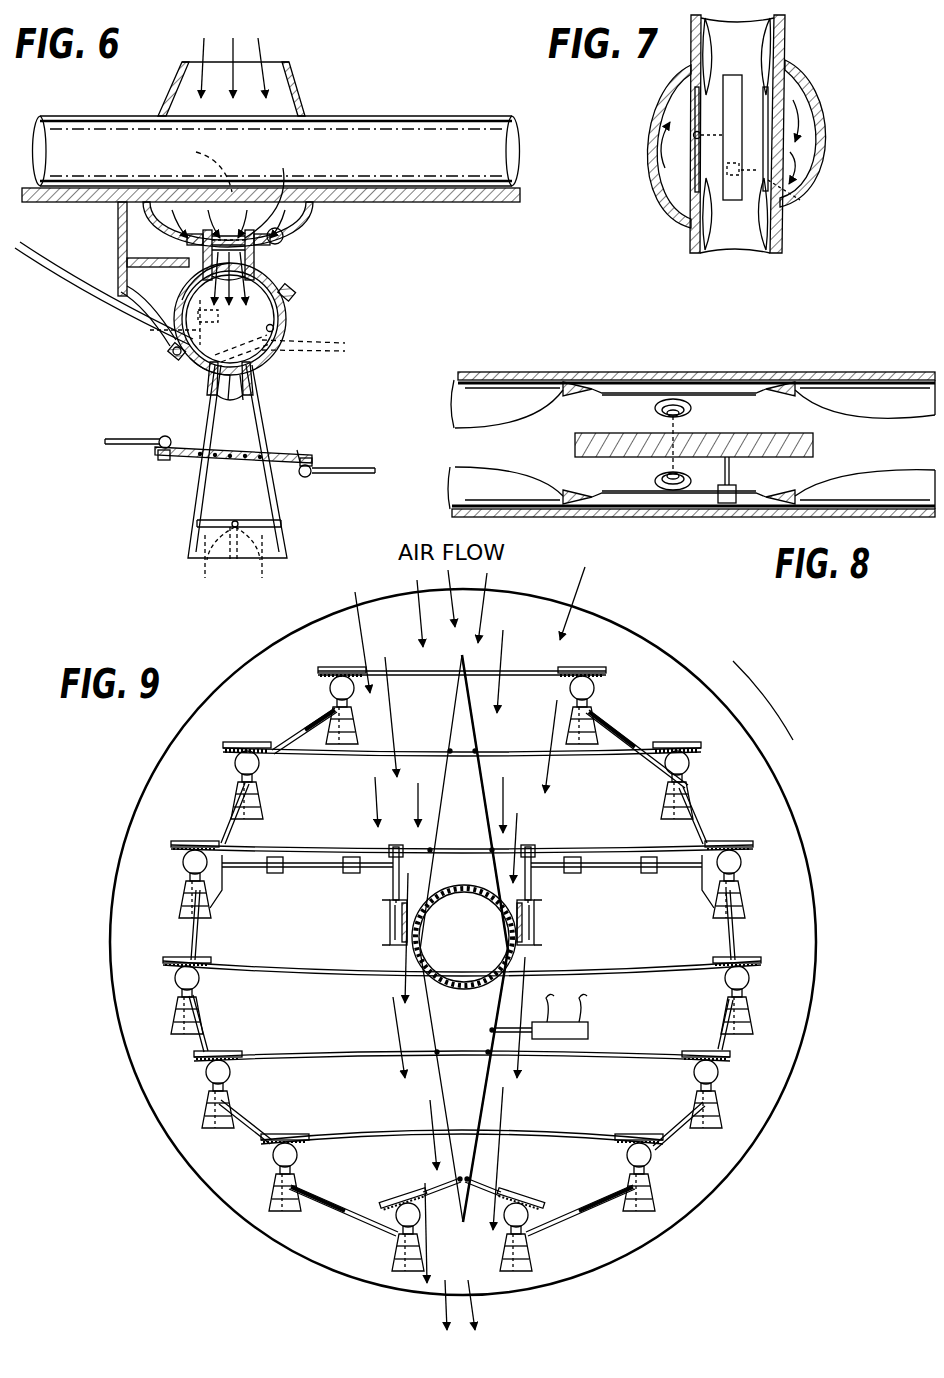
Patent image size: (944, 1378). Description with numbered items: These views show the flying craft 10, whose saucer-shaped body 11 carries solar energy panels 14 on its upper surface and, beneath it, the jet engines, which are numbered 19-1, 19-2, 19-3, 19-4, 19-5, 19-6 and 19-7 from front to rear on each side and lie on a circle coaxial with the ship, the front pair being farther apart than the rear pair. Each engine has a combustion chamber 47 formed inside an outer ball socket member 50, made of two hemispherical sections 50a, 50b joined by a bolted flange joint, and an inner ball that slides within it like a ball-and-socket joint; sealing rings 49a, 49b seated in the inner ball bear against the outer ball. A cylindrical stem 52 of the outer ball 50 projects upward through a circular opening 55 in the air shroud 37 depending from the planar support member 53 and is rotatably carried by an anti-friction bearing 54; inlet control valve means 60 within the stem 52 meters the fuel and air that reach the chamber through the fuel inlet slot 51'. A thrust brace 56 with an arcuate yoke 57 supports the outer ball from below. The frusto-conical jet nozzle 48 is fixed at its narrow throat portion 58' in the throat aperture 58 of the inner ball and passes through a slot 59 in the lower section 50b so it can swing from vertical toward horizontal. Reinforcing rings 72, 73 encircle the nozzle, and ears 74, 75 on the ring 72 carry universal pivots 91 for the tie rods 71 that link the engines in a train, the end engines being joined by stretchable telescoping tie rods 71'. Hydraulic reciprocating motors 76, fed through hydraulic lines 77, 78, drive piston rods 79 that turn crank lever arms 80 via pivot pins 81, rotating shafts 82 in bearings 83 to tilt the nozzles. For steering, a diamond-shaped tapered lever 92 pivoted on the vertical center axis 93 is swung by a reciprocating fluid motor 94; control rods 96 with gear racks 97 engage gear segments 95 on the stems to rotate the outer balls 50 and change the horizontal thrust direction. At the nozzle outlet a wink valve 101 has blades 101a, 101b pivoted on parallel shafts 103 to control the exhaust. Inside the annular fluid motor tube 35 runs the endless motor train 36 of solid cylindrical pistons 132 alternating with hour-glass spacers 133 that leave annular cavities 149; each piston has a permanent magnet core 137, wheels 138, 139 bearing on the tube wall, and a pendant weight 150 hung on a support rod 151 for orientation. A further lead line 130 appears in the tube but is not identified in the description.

In FIG. 9, the flying craft 10 is at (696, 666).
In FIG. 9, the saucer-shaped body 11 is at (762, 752).
In FIG. 6, the solar energy panels 14 is at (275, 60).
In FIG. 9, the jet engine number one 19-1 is at (330, 692).
In FIG. 9, the jet engine number two 19-2 is at (236, 775).
In FIG. 9, the jet engine number three 19-3 is at (186, 886).
In FIG. 9, the jet engine number four 19-4 is at (180, 992).
In FIG. 9, the jet engine number five 19-5 is at (213, 1086).
In FIG. 9, the jet engine number six 19-6 is at (280, 1180).
In FIG. 9, the jet engine number seven 19-7 is at (400, 1240).
In FIG. 6, the annular fluid motor tube 35 is at (430, 135).
In FIG. 7, the annular fluid motor tube 35 is at (787, 36).
In FIG. 8, the annular fluid motor tube 35 is at (815, 372).
In FIG. 7, the endless motor train 36 is at (768, 108).
In FIG. 8, the endless motor train 36 is at (740, 392).
In FIG. 6, the air shroud 37 is at (305, 232).
In FIG. 7, the air shroud 37 is at (828, 152).
In FIG. 6, the combustion chamber 47 is at (246, 334).
In FIG. 6, the jet nozzle 48 is at (196, 470).
In FIG. 6, the metallic sealing ring 49a is at (335, 350).
In FIG. 6, the metallic sealing ring 49b is at (172, 354).
In FIG. 6, the outer ball socket member 50 is at (290, 330).
In FIG. 6, the upper hemispherical section 50a is at (182, 302).
In FIG. 6, the lower hemispherical section 50b is at (200, 362).
In FIG. 6, the fuel inlet slot 51' is at (303, 320).
In FIG. 6, the cylindrical stem 52 is at (262, 288).
In FIG. 6, the planar support member 53 is at (82, 203).
In FIG. 6, the anti-friction bearing 54 is at (256, 262).
In FIG. 6, the circular opening 55 is at (268, 245).
In FIG. 6, the thrust brace 56 is at (78, 297).
In FIG. 6, the arcuate yoke 57 is at (166, 322).
In FIG. 6, the throat aperture 58 is at (251, 384).
In FIG. 6, the narrow throat portion 58' is at (211, 401).
In FIG. 6, the slot 59 is at (262, 352).
In FIG. 6, the inlet control valve means 60 is at (270, 190).
In FIG. 6, the tie rods 71 is at (246, 436).
In FIG. 9, the tie rods 71 is at (462, 966).
In FIG. 9, the stretchable tie rod 71' is at (487, 975).
In FIG. 6, the reinforcing ring 72 is at (250, 450).
In FIG. 6, the reinforcing ring 73 is at (284, 523).
In FIG. 6, the radially projecting ear 74 is at (298, 450).
In FIG. 6, the radially projecting ear 75 is at (172, 425).
In FIG. 9, the hydraulic reciprocating motor 76 is at (390, 935).
In FIG. 9, the hydraulic line 77 is at (390, 920).
In FIG. 9, the hydraulic line 78 is at (362, 946).
In FIG. 9, the piston rod 79 is at (392, 890).
In FIG. 9, the crank lever arm 80 is at (393, 852).
In FIG. 9, the pivot pin 81 is at (390, 848).
In FIG. 9, the shaft 82 is at (315, 863).
In FIG. 9, the bearings 83 is at (282, 873).
In FIG. 6, the universal pivot 91 is at (158, 455).
In FIG. 9, the diamond-shaped tapered lever 92 is at (457, 1145).
In FIG. 9, the vertical center axis 93 is at (470, 960).
In FIG. 9, the reciprocating fluid motor 94 is at (590, 1037).
In FIG. 9, the gear segment 95 is at (330, 680).
In FIG. 9, the control rod 96 is at (401, 745).
In FIG. 9, the gear rack 97 is at (345, 670).
In FIG. 6, the wink valve 101 is at (237, 570).
In FIG. 6, the wink valve blade 101a is at (206, 570).
In FIG. 6, the wink valve blade 101b is at (245, 560).
In FIG. 6, the parallel shafts 103 is at (235, 520).
In FIG. 6, the duct 130 is at (195, 165).
In FIG. 8, the solid cylindrical piston 132 is at (800, 418).
In FIG. 8, the hour glass shaped spacer 133 is at (483, 425).
In FIG. 7, the permanent magnet core 137 is at (723, 100).
In FIG. 8, the permanent magnet core 137 is at (620, 432).
In FIG. 8, the wheel 138 is at (678, 400).
In FIG. 7, the wheel 139 is at (692, 133).
In FIG. 8, the wheel 139 is at (670, 491).
In FIG. 8, the annular cavity 149 is at (512, 497).
In FIG. 7, the pendant weight 150 is at (805, 200).
In FIG. 8, the pendant weight 150 is at (727, 503).
In FIG. 8, the support rod 151 is at (735, 472).